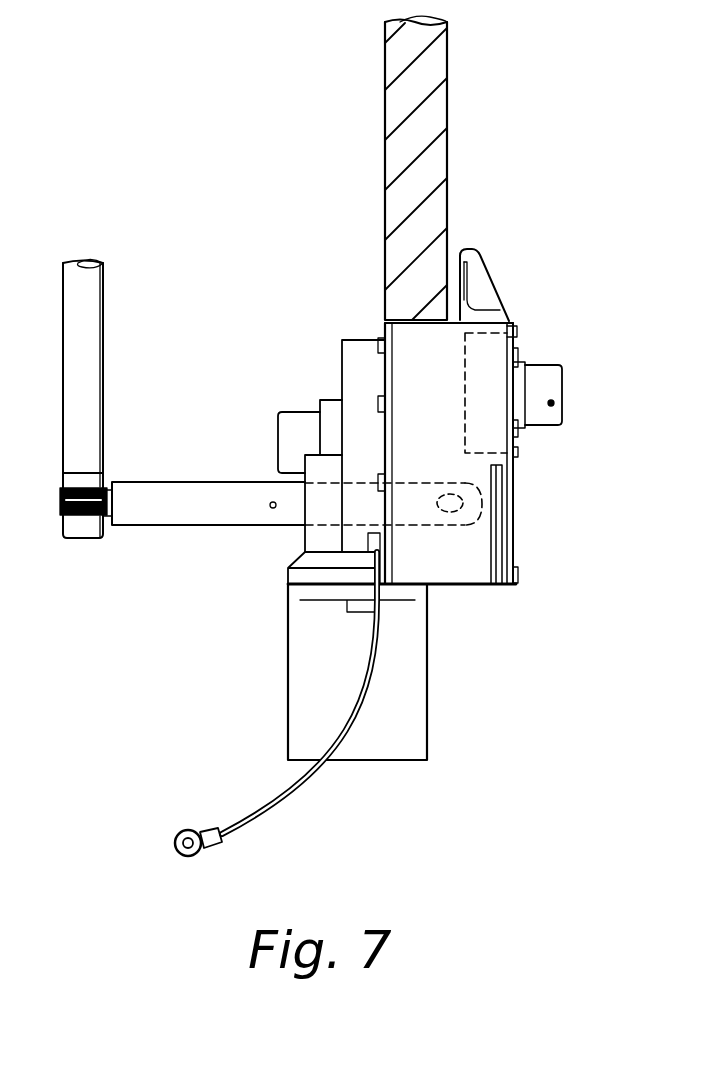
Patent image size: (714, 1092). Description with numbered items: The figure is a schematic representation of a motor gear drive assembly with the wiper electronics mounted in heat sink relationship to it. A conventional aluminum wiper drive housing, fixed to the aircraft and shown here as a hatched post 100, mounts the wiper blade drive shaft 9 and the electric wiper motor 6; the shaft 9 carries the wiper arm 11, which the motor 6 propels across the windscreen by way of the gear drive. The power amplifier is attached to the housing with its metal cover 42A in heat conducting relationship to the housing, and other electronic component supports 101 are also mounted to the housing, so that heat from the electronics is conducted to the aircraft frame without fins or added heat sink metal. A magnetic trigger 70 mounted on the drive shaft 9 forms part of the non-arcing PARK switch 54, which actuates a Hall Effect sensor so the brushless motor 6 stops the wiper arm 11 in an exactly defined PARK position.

The support post 100 is at (440, 200).
The wiper arm 11 is at (92, 355).
The wiper blade drive shaft 9 is at (167, 490).
The metal cover 42A is at (488, 345).
The electronic component supports 101 is at (513, 483).
The PARK switch 54 is at (497, 516).
The magnetic trigger 70 is at (452, 512).
The electric wiper motor 6 is at (400, 665).